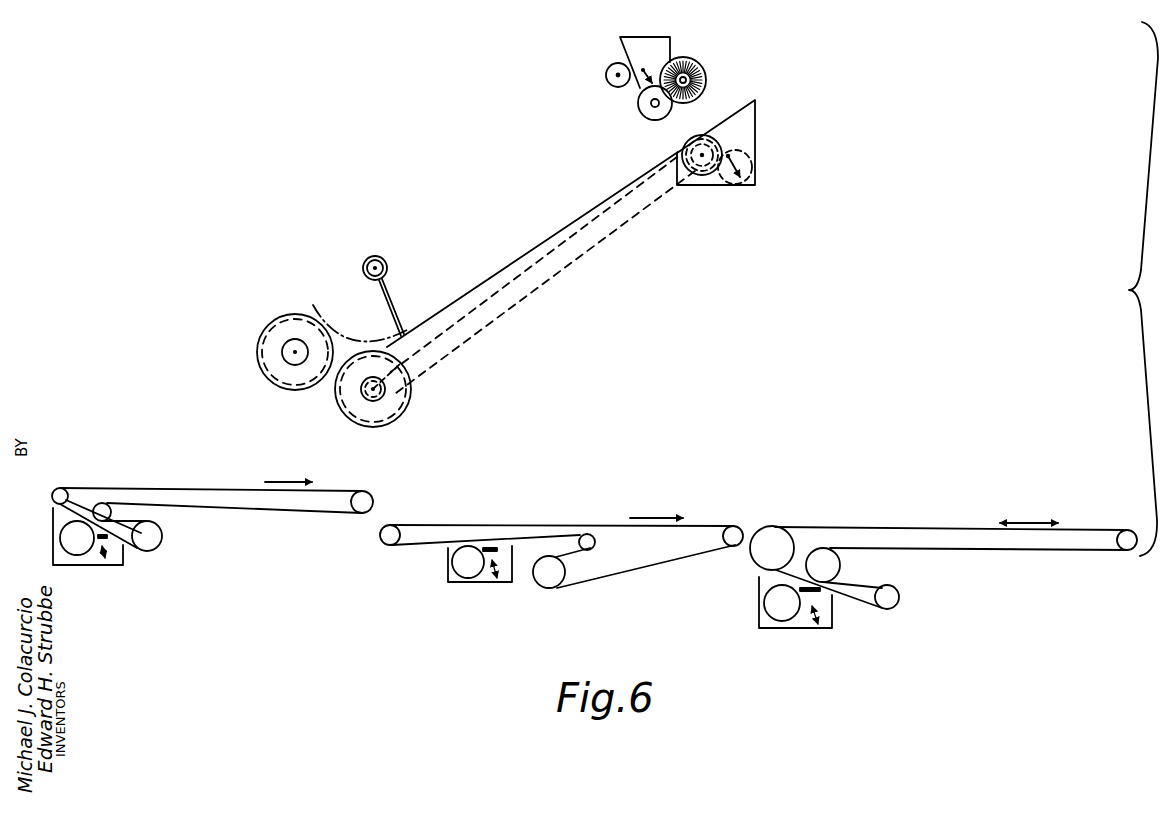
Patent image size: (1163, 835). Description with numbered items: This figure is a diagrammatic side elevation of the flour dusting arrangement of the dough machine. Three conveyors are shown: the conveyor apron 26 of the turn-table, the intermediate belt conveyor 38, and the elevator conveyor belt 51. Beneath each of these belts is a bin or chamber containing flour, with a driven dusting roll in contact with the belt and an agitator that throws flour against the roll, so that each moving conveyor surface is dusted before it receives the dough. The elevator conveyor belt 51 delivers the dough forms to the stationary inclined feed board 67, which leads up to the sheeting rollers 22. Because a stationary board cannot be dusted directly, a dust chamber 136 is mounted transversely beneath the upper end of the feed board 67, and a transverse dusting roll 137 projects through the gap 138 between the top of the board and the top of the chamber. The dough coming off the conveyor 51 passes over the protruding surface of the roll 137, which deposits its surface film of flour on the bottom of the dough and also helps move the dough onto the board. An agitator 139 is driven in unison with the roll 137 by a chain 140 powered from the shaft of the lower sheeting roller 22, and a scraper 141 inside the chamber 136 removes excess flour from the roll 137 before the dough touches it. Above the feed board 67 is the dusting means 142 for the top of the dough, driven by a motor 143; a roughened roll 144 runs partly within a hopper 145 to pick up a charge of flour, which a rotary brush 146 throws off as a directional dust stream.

The sheeting rollers 22 is at (258, 368).
The conveyor apron 26 is at (178, 488).
The intermediate belt conveyor 38 is at (595, 525).
The elevator conveyor belt 51 is at (870, 527).
The inclined feed board 67 is at (578, 220).
The dust chamber 136 is at (731, 186).
The transverse dusting roll 137 is at (701, 176).
The gap 138 is at (682, 153).
The agitator 139 is at (751, 167).
The chain 140 is at (591, 249).
The scraper 141 is at (722, 130).
The dusting means 142 is at (618, 50).
The motor 143 is at (606, 75).
The roughened roll 144 is at (645, 117).
The hopper 145 is at (633, 40).
The rotary brush 146 is at (703, 92).